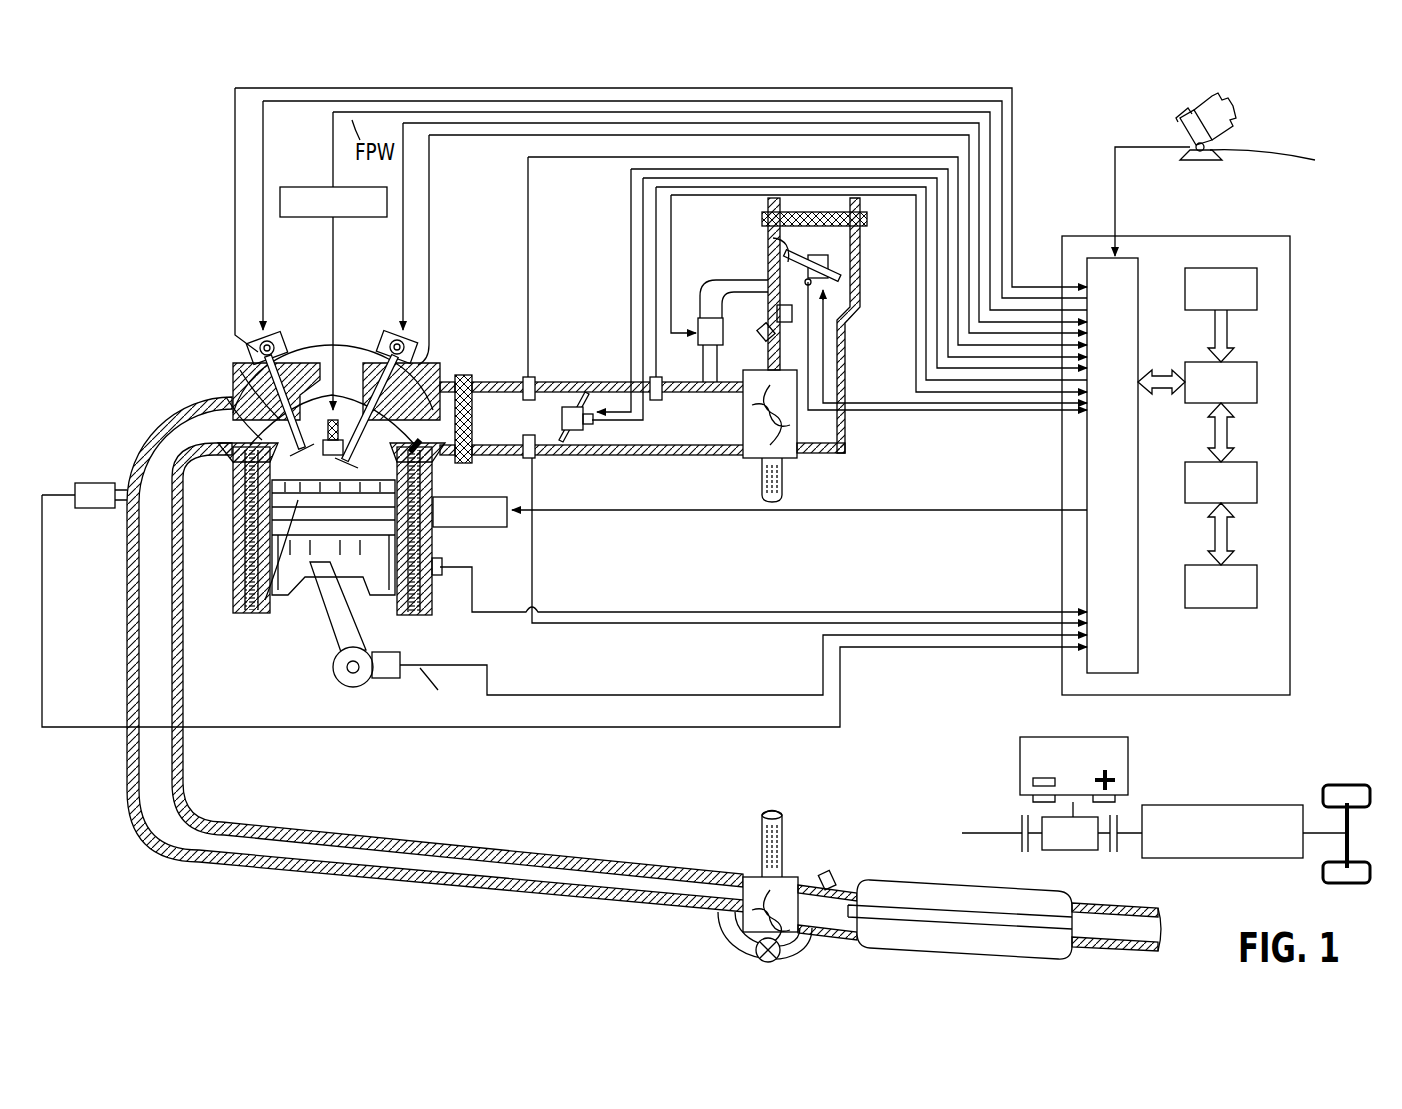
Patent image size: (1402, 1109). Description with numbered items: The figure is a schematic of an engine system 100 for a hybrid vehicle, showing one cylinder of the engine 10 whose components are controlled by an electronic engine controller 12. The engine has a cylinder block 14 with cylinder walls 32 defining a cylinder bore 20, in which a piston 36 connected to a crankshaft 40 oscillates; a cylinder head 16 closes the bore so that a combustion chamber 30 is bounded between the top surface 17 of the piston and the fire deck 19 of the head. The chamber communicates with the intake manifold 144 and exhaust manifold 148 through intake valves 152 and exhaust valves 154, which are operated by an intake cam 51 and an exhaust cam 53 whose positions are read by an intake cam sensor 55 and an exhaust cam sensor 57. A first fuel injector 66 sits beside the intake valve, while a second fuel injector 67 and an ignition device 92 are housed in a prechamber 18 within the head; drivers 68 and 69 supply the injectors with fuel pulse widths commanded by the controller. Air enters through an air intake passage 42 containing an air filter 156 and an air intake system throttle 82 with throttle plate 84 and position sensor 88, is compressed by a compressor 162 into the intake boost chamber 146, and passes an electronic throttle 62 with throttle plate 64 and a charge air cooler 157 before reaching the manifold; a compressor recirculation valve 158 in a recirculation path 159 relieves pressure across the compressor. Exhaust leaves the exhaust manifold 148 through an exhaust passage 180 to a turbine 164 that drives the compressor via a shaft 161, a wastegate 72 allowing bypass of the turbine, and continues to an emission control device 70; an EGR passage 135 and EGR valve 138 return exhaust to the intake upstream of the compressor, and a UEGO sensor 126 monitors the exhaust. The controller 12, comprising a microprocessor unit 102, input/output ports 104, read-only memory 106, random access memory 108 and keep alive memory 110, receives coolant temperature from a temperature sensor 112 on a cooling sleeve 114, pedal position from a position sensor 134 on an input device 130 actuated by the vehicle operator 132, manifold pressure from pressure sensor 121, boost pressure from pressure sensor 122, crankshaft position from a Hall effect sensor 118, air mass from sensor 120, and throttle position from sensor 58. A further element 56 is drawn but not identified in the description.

The engine system 100 is at (88, 148).
The engine 10 is at (160, 300).
The electronic engine controller 12 is at (1291, 240).
The cylinder block 14 is at (228, 512).
The cylinder head 16 is at (452, 360).
The top surface 17 is at (300, 520).
The prechamber 18 is at (355, 360).
The fire deck 19 is at (437, 372).
The cylinder bore 20 is at (238, 628).
The combustion chamber 30 is at (262, 560).
The cylinder walls 32 is at (272, 620).
The piston 36 is at (308, 580).
The crankshaft 40 is at (335, 672).
The air intake passage 42 is at (814, 325).
The intake cam 51 is at (398, 340).
The exhaust cam 53 is at (262, 340).
The intake cam sensor 55 is at (425, 348).
The clutch 56 is at (1022, 845).
The exhaust cam sensor 57 is at (258, 368).
The throttle position sensor 58 is at (590, 432).
The electronic throttle 62 is at (575, 396).
The throttle plate 64 is at (595, 400).
The first fuel injector 66 is at (470, 400).
The second fuel injector 67 is at (343, 400).
The driver 68 is at (492, 527).
The driver 69 is at (318, 187).
The emission control device 70 is at (855, 940).
The wastegate 72 is at (755, 952).
The air intake system throttle 82 is at (772, 262).
The throttle plate 84 is at (785, 258).
The position sensor 88 is at (770, 268).
The ignition device 92 is at (325, 400).
The microprocessor unit 102 is at (1257, 382).
The input/output ports 104 is at (1138, 270).
The read-only memory 106 is at (1257, 290).
The random access memory 108 is at (1257, 482).
The keep alive memory 110 is at (1257, 587).
The temperature sensor 112 is at (442, 562).
The cooling sleeve 114 is at (428, 600).
The Hall effect sensor 118 is at (382, 680).
The air mass sensor 120 is at (530, 458).
The pressure sensor 121 is at (532, 377).
The pressure sensor 122 is at (678, 370).
The UEGO sensor 126 is at (75, 485).
The input device 130 is at (1182, 128).
The vehicle operator 132 is at (1228, 112).
The position sensor 134 is at (1276, 167).
The EGR passage 135 is at (762, 338).
The EGR valve 138 is at (777, 312).
The intake manifold 144 is at (592, 418).
The intake boost chamber 146 is at (666, 420).
The exhaust manifold 148 is at (204, 429).
The intake valves 152 is at (402, 440).
The exhaust valves 154 is at (252, 402).
The air filter 156 is at (867, 219).
The charge air cooler 157 is at (472, 455).
The compressor recirculation valve 158 is at (703, 318).
The compressor recirculation path 159 is at (720, 367).
The shaft 161 is at (790, 498).
The compressor 162 is at (797, 455).
The turbine 164 is at (748, 877).
The exhaust passage 180 is at (383, 900).